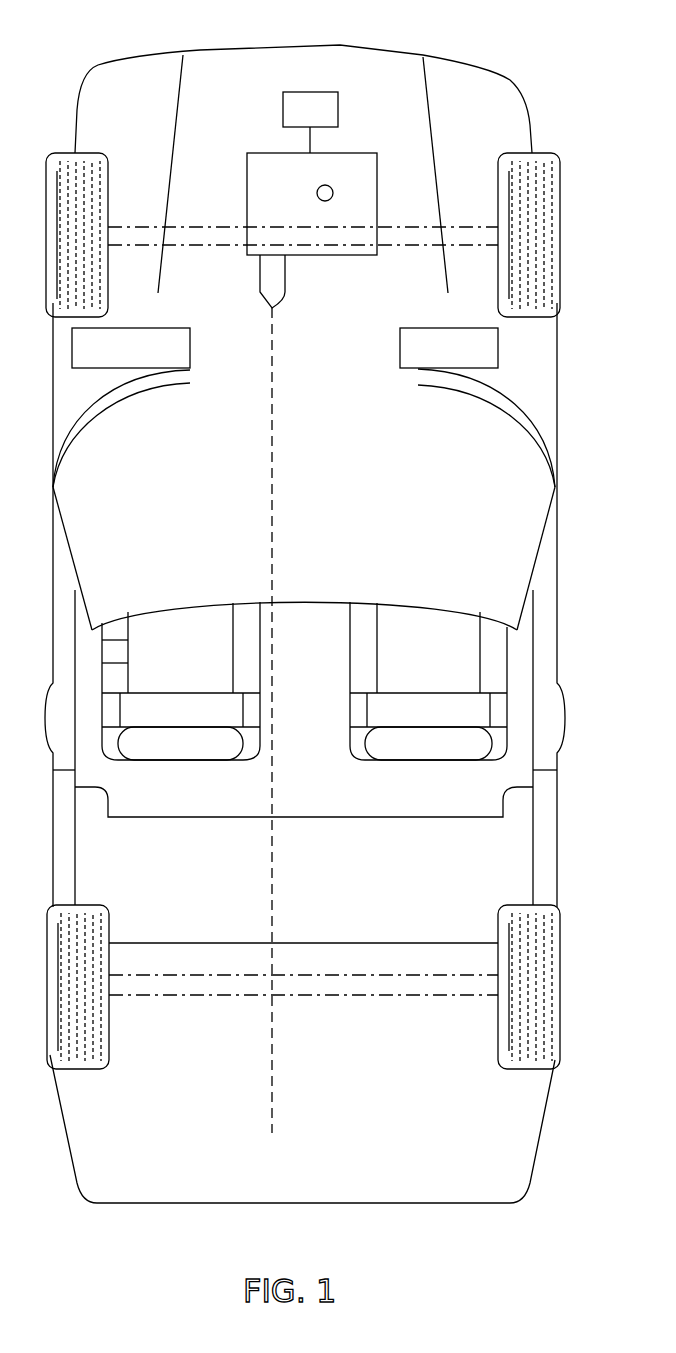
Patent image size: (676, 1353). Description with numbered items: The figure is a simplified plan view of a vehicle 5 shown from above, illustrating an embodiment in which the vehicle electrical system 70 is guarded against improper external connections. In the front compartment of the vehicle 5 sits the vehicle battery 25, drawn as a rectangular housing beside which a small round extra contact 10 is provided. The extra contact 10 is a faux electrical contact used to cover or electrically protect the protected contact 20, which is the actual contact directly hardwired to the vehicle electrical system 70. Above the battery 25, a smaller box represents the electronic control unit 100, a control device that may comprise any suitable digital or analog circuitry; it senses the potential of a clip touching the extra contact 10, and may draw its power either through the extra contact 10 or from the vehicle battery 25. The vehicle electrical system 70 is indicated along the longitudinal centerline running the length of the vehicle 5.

The vehicle 5 is at (372, 47).
The extra contact 10 is at (331, 188).
The protected contact 20 is at (374, 151).
The vehicle battery 25 is at (260, 212).
The vehicle electrical system 70 is at (271, 520).
The electronic control unit (ECU) 100 is at (280, 110).